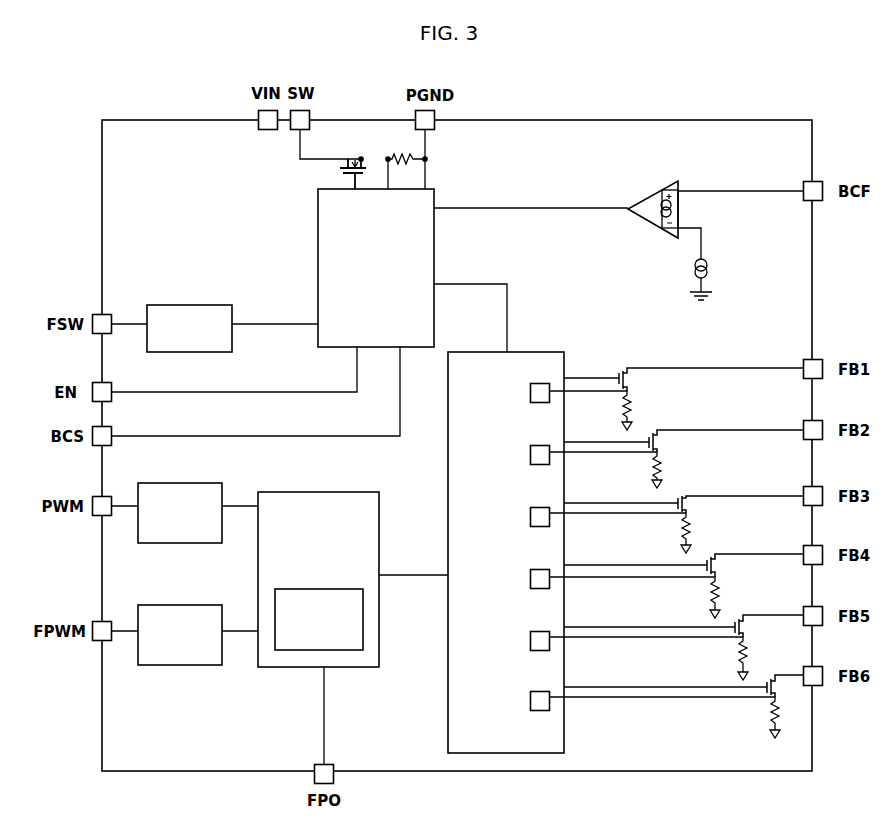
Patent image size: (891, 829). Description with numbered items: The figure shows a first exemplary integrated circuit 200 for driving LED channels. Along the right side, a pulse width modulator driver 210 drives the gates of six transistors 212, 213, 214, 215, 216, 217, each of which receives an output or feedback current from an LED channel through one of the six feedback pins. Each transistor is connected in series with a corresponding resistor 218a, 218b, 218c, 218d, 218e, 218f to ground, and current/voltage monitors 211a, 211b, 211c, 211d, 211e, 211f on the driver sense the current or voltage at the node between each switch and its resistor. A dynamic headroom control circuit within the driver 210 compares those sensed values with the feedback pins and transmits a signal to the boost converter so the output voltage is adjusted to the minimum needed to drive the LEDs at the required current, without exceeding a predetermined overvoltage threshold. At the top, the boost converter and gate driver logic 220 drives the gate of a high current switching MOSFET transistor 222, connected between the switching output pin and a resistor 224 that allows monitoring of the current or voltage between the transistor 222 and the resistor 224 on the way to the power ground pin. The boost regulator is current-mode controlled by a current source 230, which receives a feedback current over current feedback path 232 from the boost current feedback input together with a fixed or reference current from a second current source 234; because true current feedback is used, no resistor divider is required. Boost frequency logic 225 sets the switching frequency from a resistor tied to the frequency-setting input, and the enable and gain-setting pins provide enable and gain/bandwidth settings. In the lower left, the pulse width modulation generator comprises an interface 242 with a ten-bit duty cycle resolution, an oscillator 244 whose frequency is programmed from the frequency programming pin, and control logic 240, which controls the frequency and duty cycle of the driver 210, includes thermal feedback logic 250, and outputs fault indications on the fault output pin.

The integrated circuit 200 is at (120, 67).
The PWM driver 210 is at (533, 351).
The current/voltage monitor 211a is at (529, 392).
The current/voltage monitor 211b is at (529, 454).
The current/voltage monitor 211c is at (547, 528).
The current/voltage monitor 211d is at (547, 590).
The current/voltage monitor 211e is at (547, 652).
The current/voltage monitor 211f is at (547, 712).
The transistor 212 is at (622, 370).
The transistor 213 is at (652, 434).
The transistor 214 is at (681, 495).
The transistor 215 is at (709, 557).
The transistor 216 is at (737, 619).
The transistor 217 is at (765, 679).
The resistor 218a is at (624, 406).
The resistor 218b is at (654, 470).
The resistor 218c is at (683, 531).
The resistor 218d is at (712, 593).
The resistor 218e is at (740, 654).
The resistor 218f is at (770, 715).
The boost converter and gate driver logic 220 is at (434, 243).
The transistor 222 is at (356, 156).
The resistor 224 is at (400, 154).
The boost frequency logic 225 is at (232, 338).
The current source 230 is at (650, 192).
The current feedback path 232 is at (738, 189).
The current source 234 is at (708, 267).
The PWM control logic 240 is at (351, 491).
The PWM interface 242 is at (198, 482).
The PWM oscillator 244 is at (198, 604).
The thermal feedback logic 250 is at (343, 651).